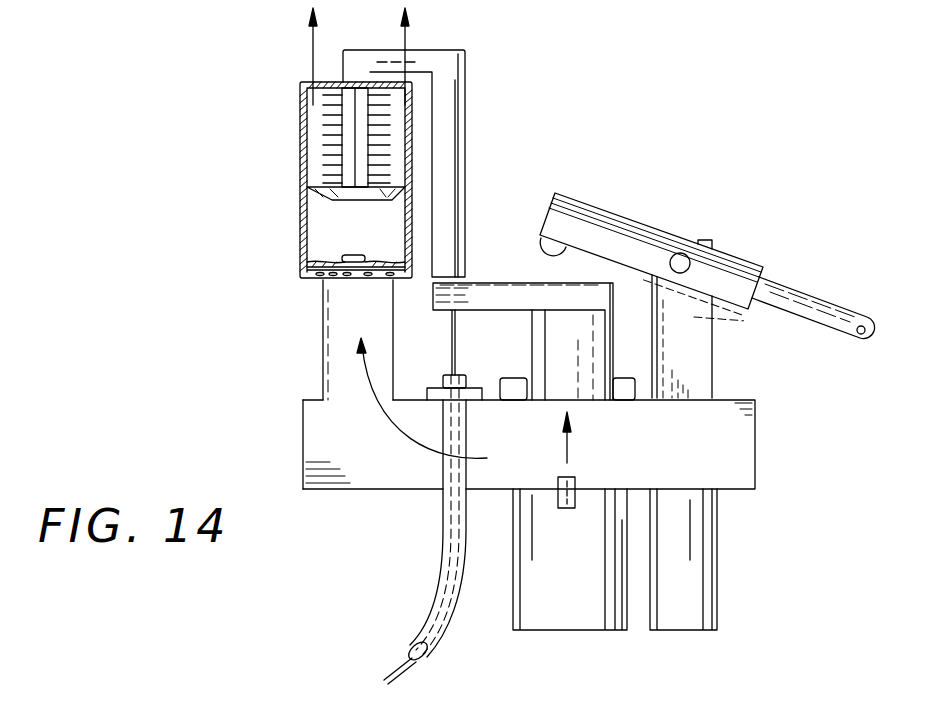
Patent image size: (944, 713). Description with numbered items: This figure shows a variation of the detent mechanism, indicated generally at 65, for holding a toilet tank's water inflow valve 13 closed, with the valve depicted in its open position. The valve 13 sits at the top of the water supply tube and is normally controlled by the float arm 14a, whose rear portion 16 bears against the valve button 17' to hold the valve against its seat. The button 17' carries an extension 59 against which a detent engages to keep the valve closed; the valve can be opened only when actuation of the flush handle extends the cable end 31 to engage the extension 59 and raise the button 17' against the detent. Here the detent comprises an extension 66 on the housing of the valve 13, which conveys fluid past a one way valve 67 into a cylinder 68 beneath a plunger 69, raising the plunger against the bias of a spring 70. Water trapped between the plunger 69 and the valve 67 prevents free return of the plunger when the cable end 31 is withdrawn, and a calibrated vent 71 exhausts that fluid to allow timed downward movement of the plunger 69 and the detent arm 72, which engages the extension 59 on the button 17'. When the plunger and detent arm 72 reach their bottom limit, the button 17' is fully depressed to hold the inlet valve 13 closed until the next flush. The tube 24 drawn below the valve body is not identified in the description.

The water inflow valve 13 is at (737, 452).
The float arm 14a is at (797, 290).
The rear portion of the float arm 16 is at (590, 205).
The valve button 17' is at (695, 336).
The flexible tube 24 is at (440, 572).
The cable end 31 is at (457, 336).
The extension 59 is at (493, 282).
The detent mechanism variation 65 is at (490, 133).
The extension on the valve housing 66 is at (320, 333).
The one way valve 67 is at (308, 283).
The cylinder 68 is at (300, 108).
The plunger 69 is at (298, 220).
The spring 70 is at (300, 155).
The calibrated vent 71 is at (298, 242).
The detent arm 72 is at (463, 87).